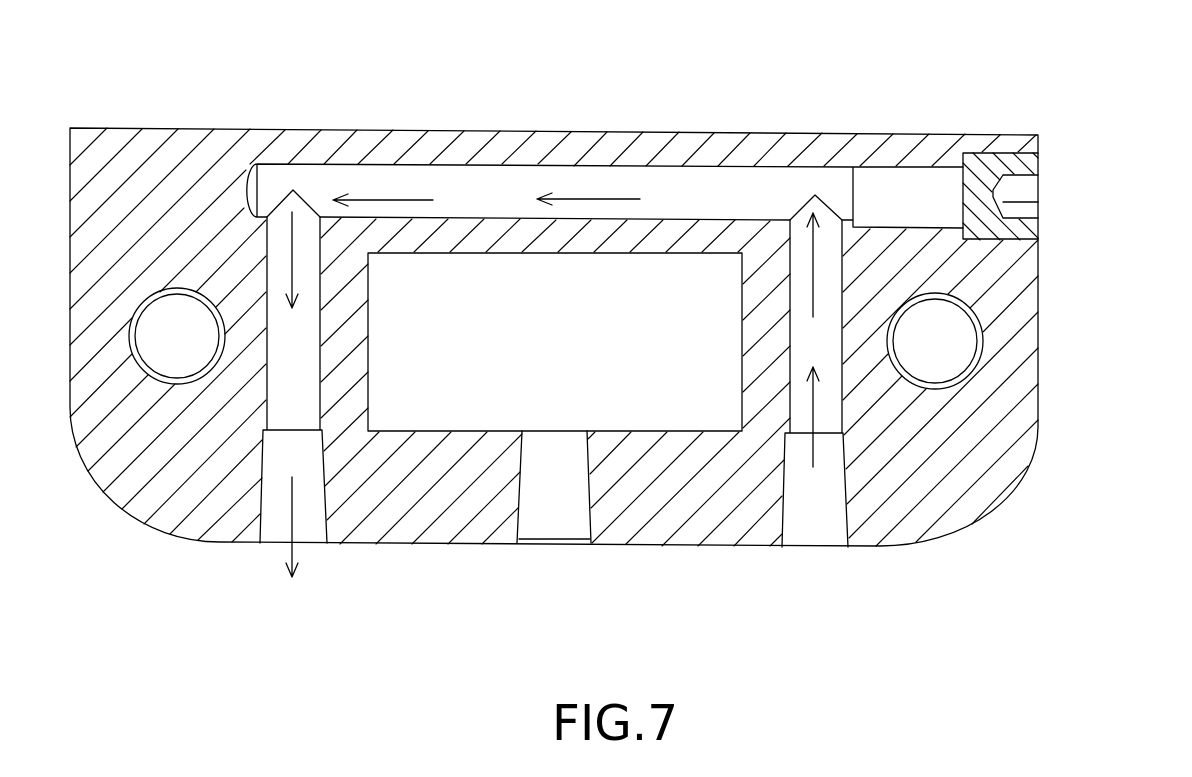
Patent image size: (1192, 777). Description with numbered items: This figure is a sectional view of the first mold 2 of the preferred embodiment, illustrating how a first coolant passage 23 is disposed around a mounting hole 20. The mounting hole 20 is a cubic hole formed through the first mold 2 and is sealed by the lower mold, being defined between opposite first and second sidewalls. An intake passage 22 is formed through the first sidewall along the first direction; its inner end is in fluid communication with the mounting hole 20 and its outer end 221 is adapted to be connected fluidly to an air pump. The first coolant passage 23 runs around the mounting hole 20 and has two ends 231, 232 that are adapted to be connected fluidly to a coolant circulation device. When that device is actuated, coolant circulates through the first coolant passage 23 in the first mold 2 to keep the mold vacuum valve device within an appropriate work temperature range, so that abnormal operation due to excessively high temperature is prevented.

The first mold 2 is at (1038, 332).
The mounting hole 20 is at (688, 413).
The intake passage 22 is at (550, 512).
The outlet opening 221 is at (513, 543).
The first coolant passage 23 is at (637, 192).
The end of the first coolant passage 231 is at (813, 548).
The end of the first coolant passage 232 is at (313, 543).